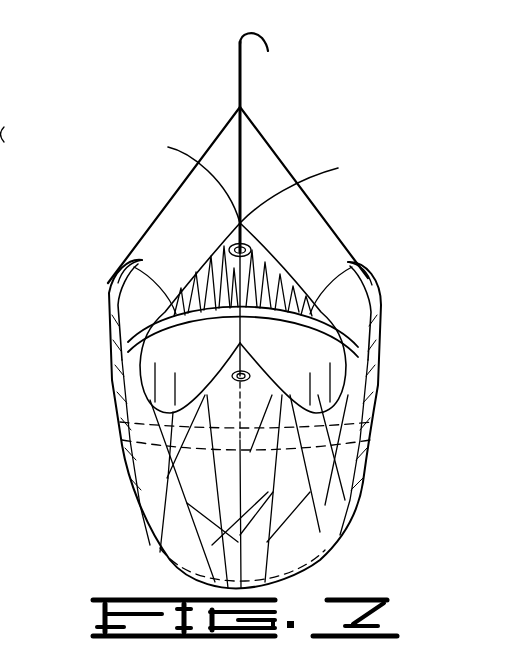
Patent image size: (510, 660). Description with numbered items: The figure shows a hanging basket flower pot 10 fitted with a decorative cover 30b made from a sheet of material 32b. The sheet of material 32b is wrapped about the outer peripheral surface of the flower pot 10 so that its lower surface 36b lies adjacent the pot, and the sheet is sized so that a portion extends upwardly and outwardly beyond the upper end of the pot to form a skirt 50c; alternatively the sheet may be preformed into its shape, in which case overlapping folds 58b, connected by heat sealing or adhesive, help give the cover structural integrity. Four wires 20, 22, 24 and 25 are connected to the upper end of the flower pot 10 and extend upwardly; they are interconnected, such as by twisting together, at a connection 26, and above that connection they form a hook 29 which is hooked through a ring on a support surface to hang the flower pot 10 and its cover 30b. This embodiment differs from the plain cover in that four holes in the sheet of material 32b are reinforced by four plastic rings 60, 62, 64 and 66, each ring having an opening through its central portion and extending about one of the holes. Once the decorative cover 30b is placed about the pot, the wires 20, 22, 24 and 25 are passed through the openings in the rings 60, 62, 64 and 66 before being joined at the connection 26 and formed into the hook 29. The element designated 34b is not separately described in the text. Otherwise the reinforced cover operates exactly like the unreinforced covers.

The hanging basket flower pot 10 is at (292, 337).
The wire 20 is at (173, 195).
The wire 22 is at (186, 179).
The wire 24 is at (267, 142).
The wire 25 is at (236, 329).
The connection 26 is at (240, 104).
The hook 29 is at (267, 38).
The decorative cover 30b is at (113, 407).
The sheet of material 32b is at (312, 513).
The sewing cuff 34b is at (132, 453).
The lower surface 36b is at (225, 267).
The skirt 50c is at (386, 330).
The overlapping folds 58b is at (187, 500).
The plastic ring 60 is at (105, 290).
The plastic ring 62 is at (304, 189).
The plastic ring 64 is at (372, 284).
The plastic ring 66 is at (250, 376).